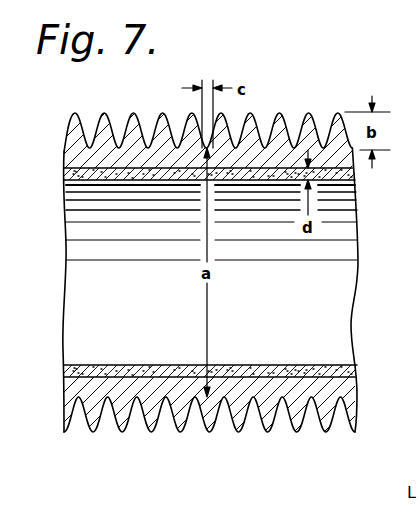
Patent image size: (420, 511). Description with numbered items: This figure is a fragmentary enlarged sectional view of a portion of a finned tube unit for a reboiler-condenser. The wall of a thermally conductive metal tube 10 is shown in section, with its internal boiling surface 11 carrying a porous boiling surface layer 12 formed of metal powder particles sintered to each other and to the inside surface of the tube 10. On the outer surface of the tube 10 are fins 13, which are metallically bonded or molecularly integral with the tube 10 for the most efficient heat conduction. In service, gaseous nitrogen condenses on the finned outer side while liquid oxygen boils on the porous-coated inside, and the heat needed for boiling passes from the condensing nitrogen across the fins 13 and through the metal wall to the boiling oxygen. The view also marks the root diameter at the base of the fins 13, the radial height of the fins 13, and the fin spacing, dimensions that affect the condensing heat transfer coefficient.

The thermally conductive metal tube 10 is at (357, 267).
The internal boiling surface 11 is at (324, 368).
The porous boiling surface layer 12 is at (267, 368).
The fins 13 is at (267, 423).